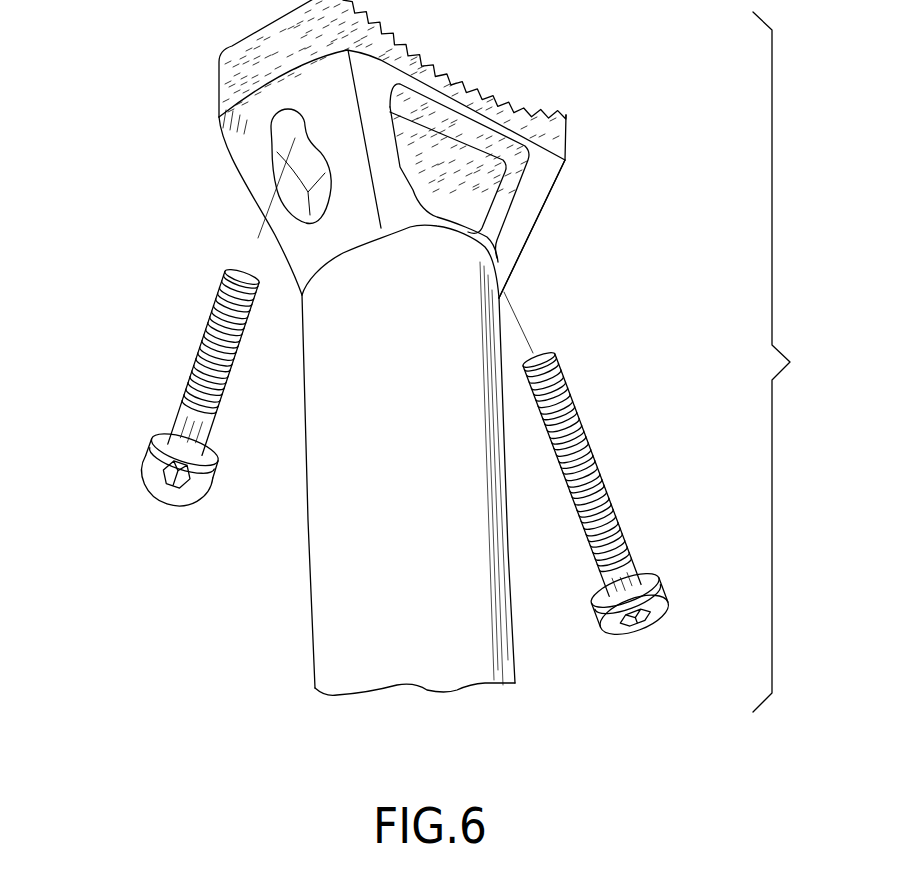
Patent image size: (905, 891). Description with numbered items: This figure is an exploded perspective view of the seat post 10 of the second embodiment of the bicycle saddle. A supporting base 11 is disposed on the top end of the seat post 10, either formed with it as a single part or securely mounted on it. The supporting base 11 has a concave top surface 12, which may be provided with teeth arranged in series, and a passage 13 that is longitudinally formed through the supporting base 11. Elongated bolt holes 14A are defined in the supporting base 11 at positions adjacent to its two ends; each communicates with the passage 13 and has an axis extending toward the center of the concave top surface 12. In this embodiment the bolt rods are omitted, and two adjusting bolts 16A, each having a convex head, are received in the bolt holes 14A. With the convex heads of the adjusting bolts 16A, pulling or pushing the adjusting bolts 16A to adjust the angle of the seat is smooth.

The seat post 10 is at (437, 356).
The supporting base 11 is at (532, 202).
The concave top surface 12 is at (524, 108).
The passage 13 is at (414, 137).
The bolt hole 14A is at (285, 132).
The adjusting bolt 16A is at (192, 423).